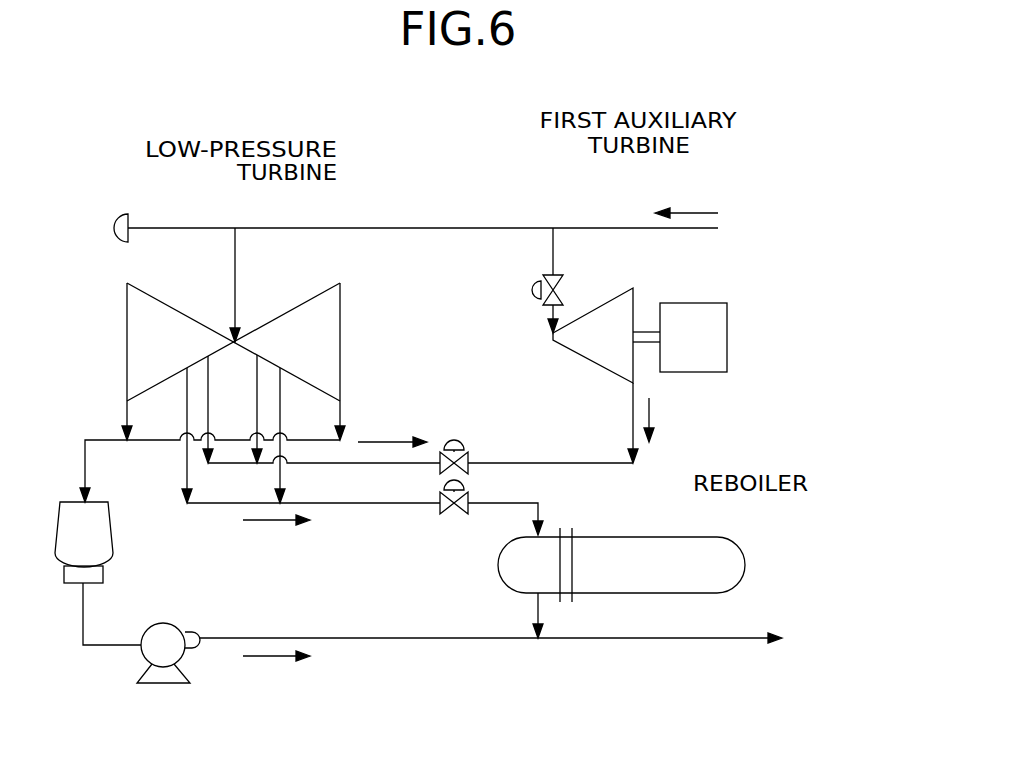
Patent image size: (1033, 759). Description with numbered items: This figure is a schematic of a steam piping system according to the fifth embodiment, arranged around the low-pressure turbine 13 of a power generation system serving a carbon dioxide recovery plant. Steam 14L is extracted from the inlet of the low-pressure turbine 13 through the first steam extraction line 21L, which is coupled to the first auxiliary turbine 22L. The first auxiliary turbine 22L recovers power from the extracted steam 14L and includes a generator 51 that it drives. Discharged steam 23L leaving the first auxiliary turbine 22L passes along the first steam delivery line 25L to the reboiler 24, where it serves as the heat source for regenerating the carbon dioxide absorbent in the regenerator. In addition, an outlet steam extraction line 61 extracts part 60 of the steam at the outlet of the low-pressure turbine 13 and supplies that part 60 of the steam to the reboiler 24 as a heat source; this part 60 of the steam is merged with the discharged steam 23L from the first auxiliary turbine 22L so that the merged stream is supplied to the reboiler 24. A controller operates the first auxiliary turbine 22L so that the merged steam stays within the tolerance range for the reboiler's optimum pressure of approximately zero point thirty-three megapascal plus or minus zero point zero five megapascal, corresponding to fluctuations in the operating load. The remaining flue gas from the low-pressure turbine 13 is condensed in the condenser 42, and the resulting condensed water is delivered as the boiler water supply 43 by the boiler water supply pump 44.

The low-pressure turbine 13 is at (325, 278).
The steam 14L is at (688, 213).
The first steam extraction line 21L is at (553, 256).
The first auxiliary turbine 22L is at (634, 278).
The discharged steam 23L is at (652, 411).
The reboiler 24 is at (692, 537).
The first steam delivery line 25L is at (630, 418).
The condenser 42 is at (113, 542).
The boiler water supply 43 is at (275, 660).
The boiler water supply pump 44 is at (163, 623).
The generator 51 is at (697, 303).
The part of the steam 60 is at (383, 442).
The outlet steam extraction line 61 is at (338, 505).